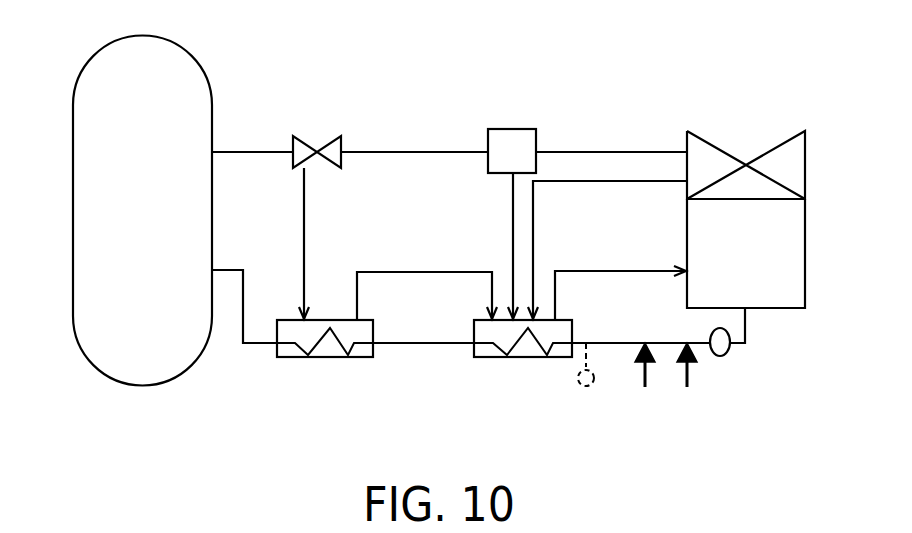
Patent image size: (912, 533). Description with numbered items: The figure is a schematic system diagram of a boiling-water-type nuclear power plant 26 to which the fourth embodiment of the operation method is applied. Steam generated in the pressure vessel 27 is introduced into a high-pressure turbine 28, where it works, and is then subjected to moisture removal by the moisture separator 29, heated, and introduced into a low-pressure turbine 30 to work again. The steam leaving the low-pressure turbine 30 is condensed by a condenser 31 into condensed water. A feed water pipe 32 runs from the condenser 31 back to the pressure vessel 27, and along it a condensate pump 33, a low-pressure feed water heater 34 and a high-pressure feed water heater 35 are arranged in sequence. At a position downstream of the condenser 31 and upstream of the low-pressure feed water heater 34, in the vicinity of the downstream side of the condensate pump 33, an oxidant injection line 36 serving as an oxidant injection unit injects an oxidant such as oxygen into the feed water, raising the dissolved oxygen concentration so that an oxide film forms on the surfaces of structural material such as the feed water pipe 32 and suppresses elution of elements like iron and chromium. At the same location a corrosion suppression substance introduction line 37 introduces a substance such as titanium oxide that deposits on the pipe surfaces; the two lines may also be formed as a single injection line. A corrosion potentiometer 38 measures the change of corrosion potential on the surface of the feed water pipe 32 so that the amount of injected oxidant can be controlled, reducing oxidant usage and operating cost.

The boiling-water-type nuclear power plant 26 is at (603, 78).
The pressure vessel 27 is at (73, 210).
The high-pressure turbine 28 is at (293, 140).
The moisture separator 29 is at (488, 137).
The low-pressure turbine 30 is at (805, 163).
The condenser 31 is at (805, 245).
The feed water pipe 32 is at (610, 344).
The condensate pump 33 is at (721, 357).
The low-pressure feed water heater 34 is at (524, 357).
The high-pressure feed water heater 35 is at (328, 357).
The oxidant injection line 36 is at (687, 387).
The corrosion suppression substance introduction line 37 is at (645, 387).
The corrosion potentiometer 38 is at (586, 387).